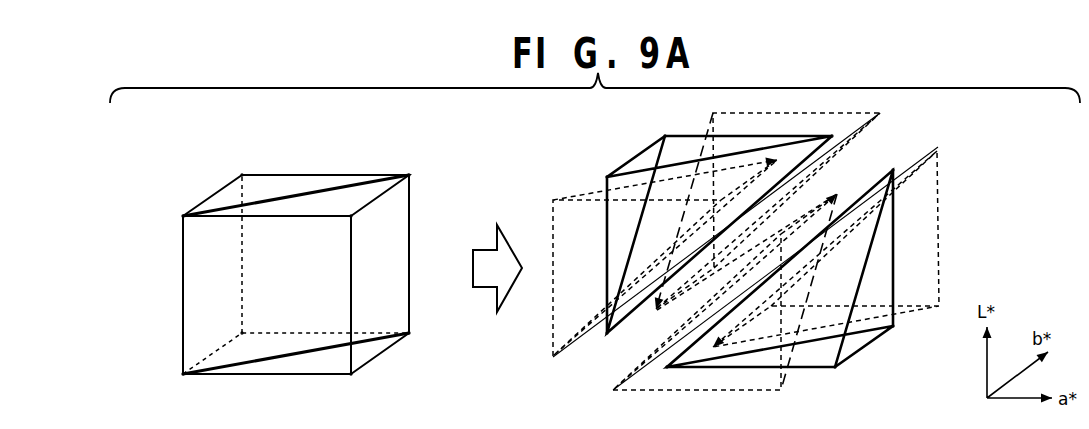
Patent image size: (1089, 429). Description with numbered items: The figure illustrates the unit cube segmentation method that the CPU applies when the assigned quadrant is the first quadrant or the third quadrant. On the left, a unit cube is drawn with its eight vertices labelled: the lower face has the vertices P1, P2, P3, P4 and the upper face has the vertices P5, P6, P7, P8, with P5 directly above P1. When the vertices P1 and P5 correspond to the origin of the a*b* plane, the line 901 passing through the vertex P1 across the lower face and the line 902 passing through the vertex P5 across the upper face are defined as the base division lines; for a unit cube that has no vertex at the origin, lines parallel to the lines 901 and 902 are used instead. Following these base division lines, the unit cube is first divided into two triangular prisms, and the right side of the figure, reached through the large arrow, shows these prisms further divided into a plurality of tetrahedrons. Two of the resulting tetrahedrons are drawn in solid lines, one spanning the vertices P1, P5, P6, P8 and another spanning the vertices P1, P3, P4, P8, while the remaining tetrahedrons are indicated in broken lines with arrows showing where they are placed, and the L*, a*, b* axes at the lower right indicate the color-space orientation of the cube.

The base division line 901 is at (308, 355).
The base division line 902 is at (305, 193).
The vertex P1 is at (416, 367).
The vertex P2 is at (229, 326).
The vertex P3 is at (598, 384).
The vertex P4 is at (663, 337).
The vertex P5 is at (381, 195).
The vertex P6 is at (441, 146).
The vertex P7 is at (366, 226).
The vertex P8 is at (660, 150).